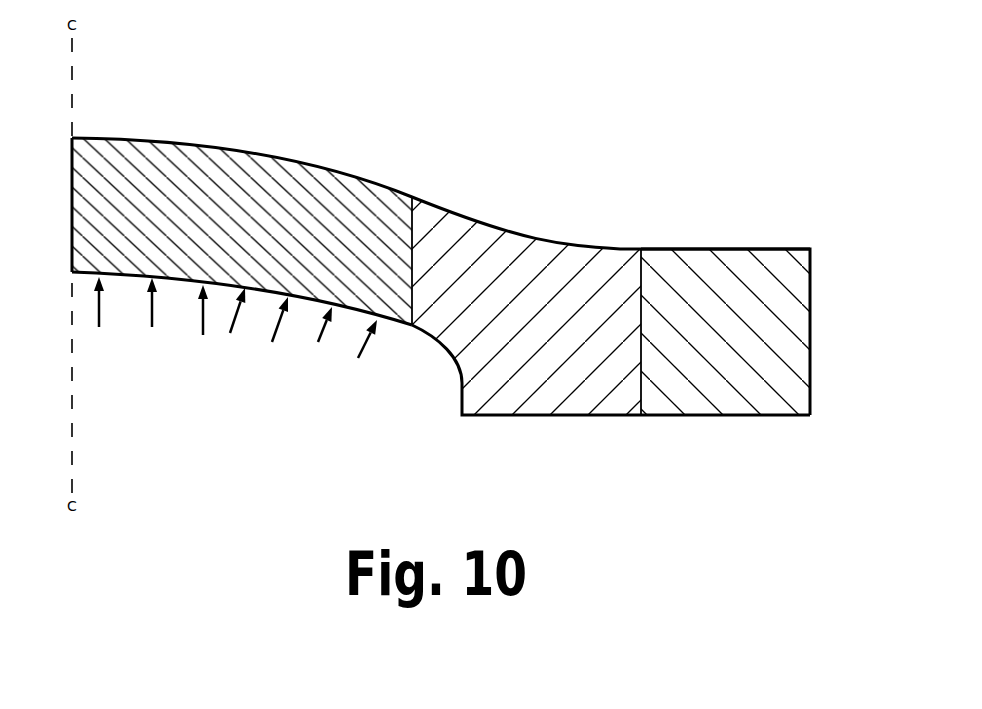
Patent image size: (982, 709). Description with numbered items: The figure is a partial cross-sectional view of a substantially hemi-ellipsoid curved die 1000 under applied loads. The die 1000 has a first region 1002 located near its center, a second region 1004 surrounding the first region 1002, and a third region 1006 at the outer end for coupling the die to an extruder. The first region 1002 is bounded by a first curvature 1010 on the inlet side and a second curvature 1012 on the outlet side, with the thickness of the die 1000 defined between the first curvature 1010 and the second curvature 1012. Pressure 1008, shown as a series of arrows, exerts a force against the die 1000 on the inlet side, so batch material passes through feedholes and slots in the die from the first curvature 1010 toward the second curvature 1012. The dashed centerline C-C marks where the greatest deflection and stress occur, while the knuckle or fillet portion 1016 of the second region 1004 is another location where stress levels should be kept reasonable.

The die 1000 is at (441, 276).
The first region 1002 is at (192, 223).
The second region 1004 is at (512, 304).
The third region 1006 is at (709, 304).
The pressure 1008 is at (367, 359).
The first curvature 1010 is at (392, 325).
The second curvature 1012 is at (258, 151).
The fillet portion 1016 is at (452, 365).